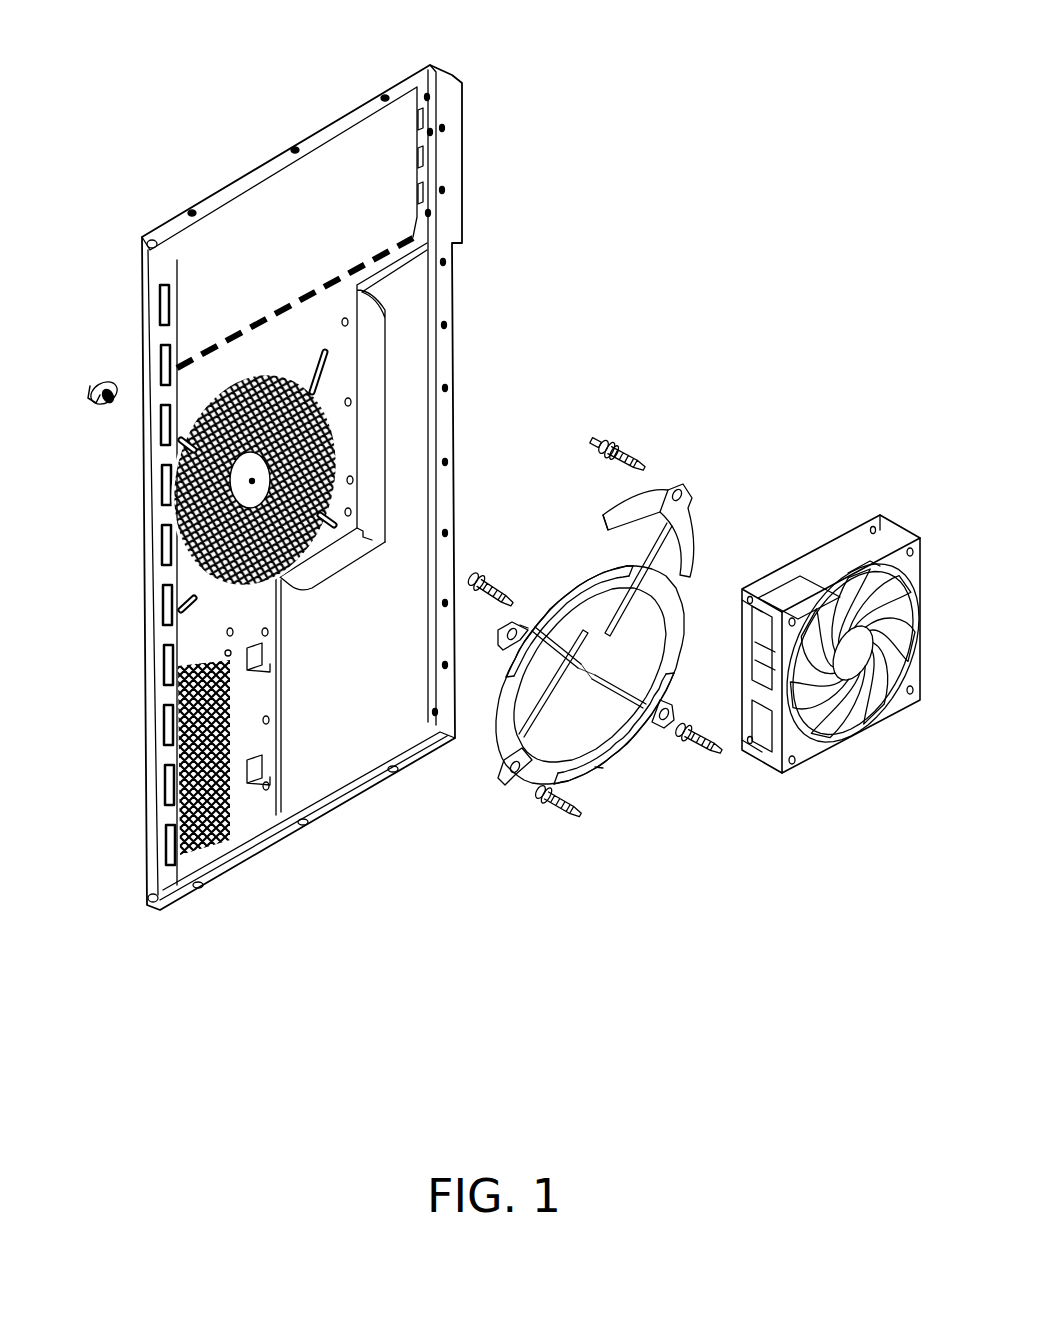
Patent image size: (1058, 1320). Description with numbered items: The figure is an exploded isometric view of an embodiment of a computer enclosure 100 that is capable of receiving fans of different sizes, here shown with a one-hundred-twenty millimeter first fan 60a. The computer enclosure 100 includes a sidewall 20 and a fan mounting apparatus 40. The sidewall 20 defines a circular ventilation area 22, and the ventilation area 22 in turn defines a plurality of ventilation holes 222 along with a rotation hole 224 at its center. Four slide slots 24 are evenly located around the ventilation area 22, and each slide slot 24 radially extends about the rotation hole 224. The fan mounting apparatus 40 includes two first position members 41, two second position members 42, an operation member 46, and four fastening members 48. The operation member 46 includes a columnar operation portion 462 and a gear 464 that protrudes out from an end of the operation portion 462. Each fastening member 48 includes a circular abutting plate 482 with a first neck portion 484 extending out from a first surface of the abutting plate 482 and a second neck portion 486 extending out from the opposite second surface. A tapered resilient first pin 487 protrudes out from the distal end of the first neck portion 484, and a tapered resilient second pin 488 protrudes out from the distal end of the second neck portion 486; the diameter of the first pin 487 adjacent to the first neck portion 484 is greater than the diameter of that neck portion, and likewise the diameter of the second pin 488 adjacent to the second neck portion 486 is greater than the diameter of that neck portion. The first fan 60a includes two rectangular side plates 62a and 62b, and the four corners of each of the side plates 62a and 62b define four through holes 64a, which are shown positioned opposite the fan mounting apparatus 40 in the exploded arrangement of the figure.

The computer enclosure 100 is at (598, 68).
The sidewall 20 is at (407, 463).
The ventilation area 22 is at (180, 460).
The ventilation holes 222 is at (250, 483).
The rotation hole 224 is at (178, 547).
The slide slots 24 is at (327, 358).
The operation member 46 is at (125, 378).
The operation portion 462 is at (100, 378).
The gear 464 is at (109, 412).
The fan mounting apparatus 40 is at (637, 830).
The first position members 41 is at (693, 513).
The second position members 42 is at (643, 730).
The fastening members 48 is at (662, 449).
The abutting plate 482 is at (627, 448).
The first neck portion 484 is at (620, 446).
The second neck portion 486 is at (625, 455).
The first pin 487 is at (618, 447).
The second pin 488 is at (637, 470).
The first fan 60a is at (857, 750).
The side plate 62a is at (902, 552).
The side plate 62b is at (853, 522).
The through holes 64a is at (797, 760).